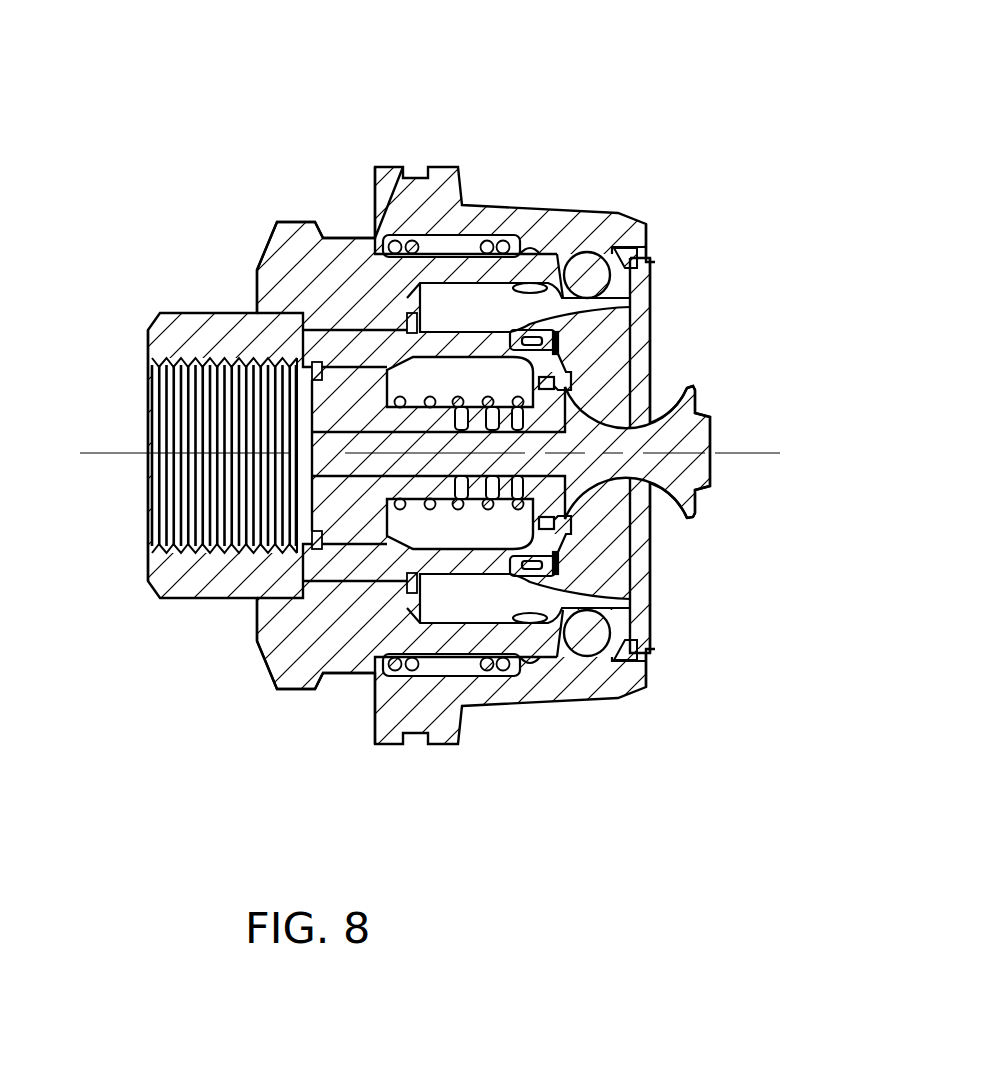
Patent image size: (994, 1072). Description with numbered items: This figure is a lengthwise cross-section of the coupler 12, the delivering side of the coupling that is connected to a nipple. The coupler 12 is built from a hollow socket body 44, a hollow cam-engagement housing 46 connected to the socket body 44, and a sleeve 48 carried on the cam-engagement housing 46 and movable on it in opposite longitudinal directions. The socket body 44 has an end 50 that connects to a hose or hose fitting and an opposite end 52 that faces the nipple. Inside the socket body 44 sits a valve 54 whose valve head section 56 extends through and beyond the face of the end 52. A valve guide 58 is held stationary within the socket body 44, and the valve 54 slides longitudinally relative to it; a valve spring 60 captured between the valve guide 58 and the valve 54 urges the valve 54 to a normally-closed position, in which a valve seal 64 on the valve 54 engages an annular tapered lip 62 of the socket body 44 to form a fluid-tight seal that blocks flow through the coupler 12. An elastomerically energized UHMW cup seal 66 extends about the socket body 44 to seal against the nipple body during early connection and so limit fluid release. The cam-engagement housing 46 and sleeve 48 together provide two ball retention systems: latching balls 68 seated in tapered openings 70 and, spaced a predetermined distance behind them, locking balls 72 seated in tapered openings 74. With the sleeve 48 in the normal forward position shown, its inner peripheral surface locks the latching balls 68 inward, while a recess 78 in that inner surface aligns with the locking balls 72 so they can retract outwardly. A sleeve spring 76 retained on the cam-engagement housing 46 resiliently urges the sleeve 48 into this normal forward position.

The coupler 12 is at (565, 103).
The socket body 44 is at (180, 588).
The cam-engagement housing 46 is at (268, 660).
The sleeve 48 is at (552, 705).
The end 50 is at (150, 557).
The end 52 is at (657, 633).
The valve 54 is at (578, 398).
The valve head section 56 is at (710, 437).
The valve guide 58 is at (340, 380).
The valve spring 60 is at (428, 535).
The annular tapered lip 62 is at (573, 383).
The valve seal 64 is at (563, 518).
The cup seal 66 is at (660, 262).
The latching balls 68 is at (600, 247).
The tapered openings 70 is at (573, 248).
The locking balls 72 is at (537, 293).
The tapered openings 74 is at (557, 247).
The sleeve spring 76 is at (498, 678).
The recess 78 is at (522, 238).